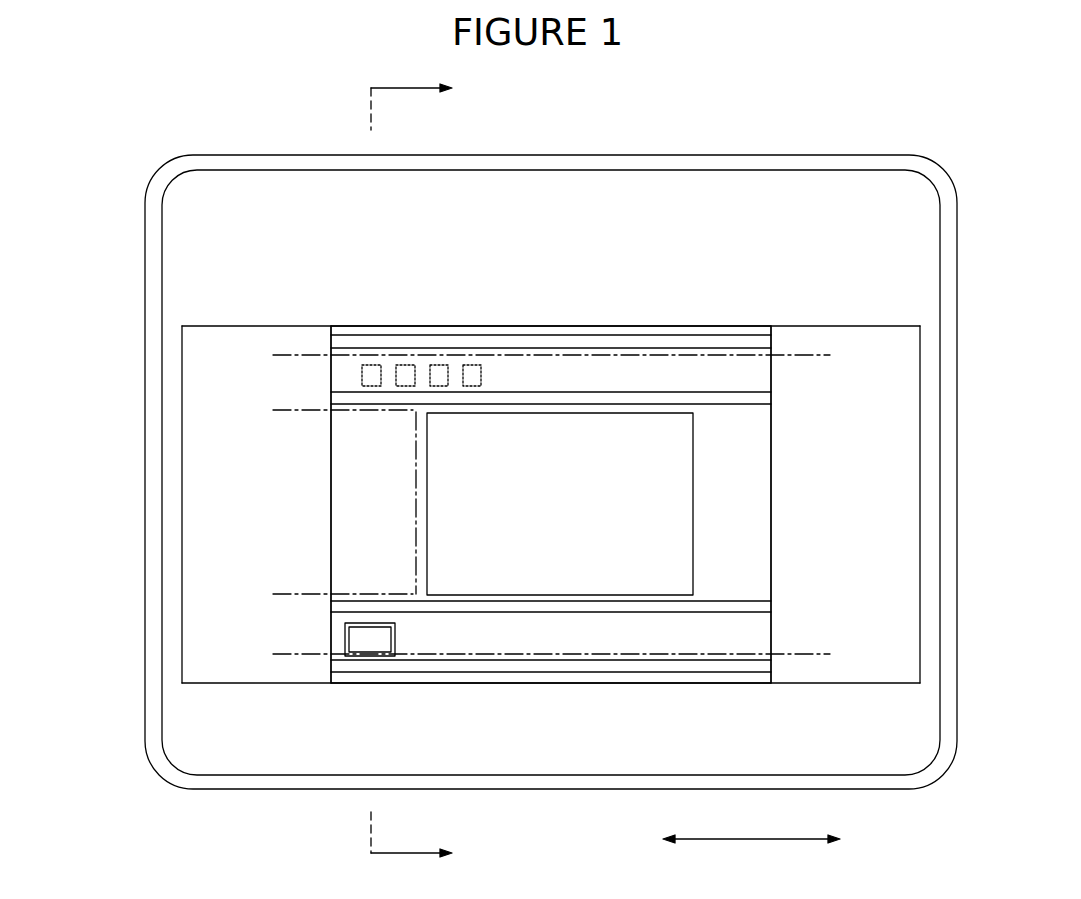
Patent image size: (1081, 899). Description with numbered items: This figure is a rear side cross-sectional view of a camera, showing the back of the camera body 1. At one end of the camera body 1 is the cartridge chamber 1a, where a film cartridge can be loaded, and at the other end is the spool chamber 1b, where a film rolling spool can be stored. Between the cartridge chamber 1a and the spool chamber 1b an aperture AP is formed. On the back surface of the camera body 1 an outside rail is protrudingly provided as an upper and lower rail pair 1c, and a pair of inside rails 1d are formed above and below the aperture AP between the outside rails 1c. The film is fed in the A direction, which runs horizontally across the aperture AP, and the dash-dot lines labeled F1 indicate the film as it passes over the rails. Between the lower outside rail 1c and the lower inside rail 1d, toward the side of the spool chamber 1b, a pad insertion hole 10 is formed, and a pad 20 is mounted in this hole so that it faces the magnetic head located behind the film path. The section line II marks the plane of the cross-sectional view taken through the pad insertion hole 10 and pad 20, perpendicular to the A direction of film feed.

The camera body 1 is at (607, 326).
The cartridge chamber 1a is at (860, 458).
The spool chamber 1b is at (223, 503).
The outside rail 1c is at (697, 343).
The inside rails 1d is at (531, 397).
The pad insertion hole 10 is at (395, 636).
The pad 20 is at (375, 644).
The aperture AP is at (694, 510).
The fold/feed line F1 is at (300, 356).
The section line II is at (396, 470).
The A direction A is at (751, 829).